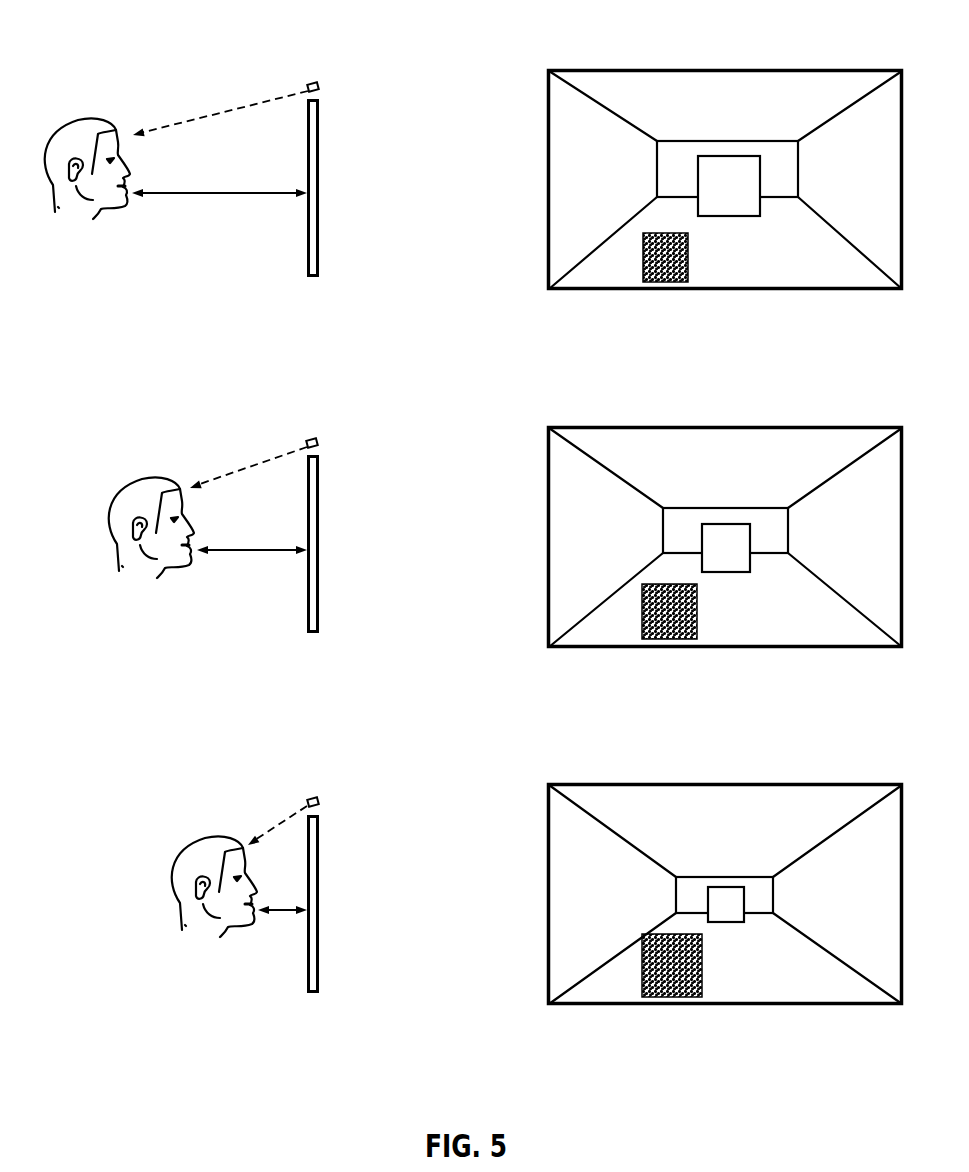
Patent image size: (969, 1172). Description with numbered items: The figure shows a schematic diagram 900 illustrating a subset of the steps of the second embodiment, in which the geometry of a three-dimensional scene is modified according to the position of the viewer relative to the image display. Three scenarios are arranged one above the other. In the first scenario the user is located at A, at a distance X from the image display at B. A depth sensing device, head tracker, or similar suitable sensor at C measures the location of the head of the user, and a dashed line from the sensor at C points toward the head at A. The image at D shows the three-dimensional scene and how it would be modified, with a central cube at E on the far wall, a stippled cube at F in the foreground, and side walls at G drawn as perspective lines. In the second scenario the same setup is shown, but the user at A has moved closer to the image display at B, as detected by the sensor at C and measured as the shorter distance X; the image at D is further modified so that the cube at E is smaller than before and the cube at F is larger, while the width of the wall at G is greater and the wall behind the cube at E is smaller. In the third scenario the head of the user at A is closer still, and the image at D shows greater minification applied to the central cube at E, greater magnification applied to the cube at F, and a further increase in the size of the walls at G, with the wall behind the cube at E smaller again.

The schematic diagram 900 is at (125, 44).
The user location A is at (151, 514).
The image display B is at (313, 565).
The depth sensing device C is at (239, 453).
The image D is at (708, 540).
The central cube E is at (727, 531).
The cube F is at (657, 615).
The wall G is at (725, 537).
The distance X is at (219, 570).